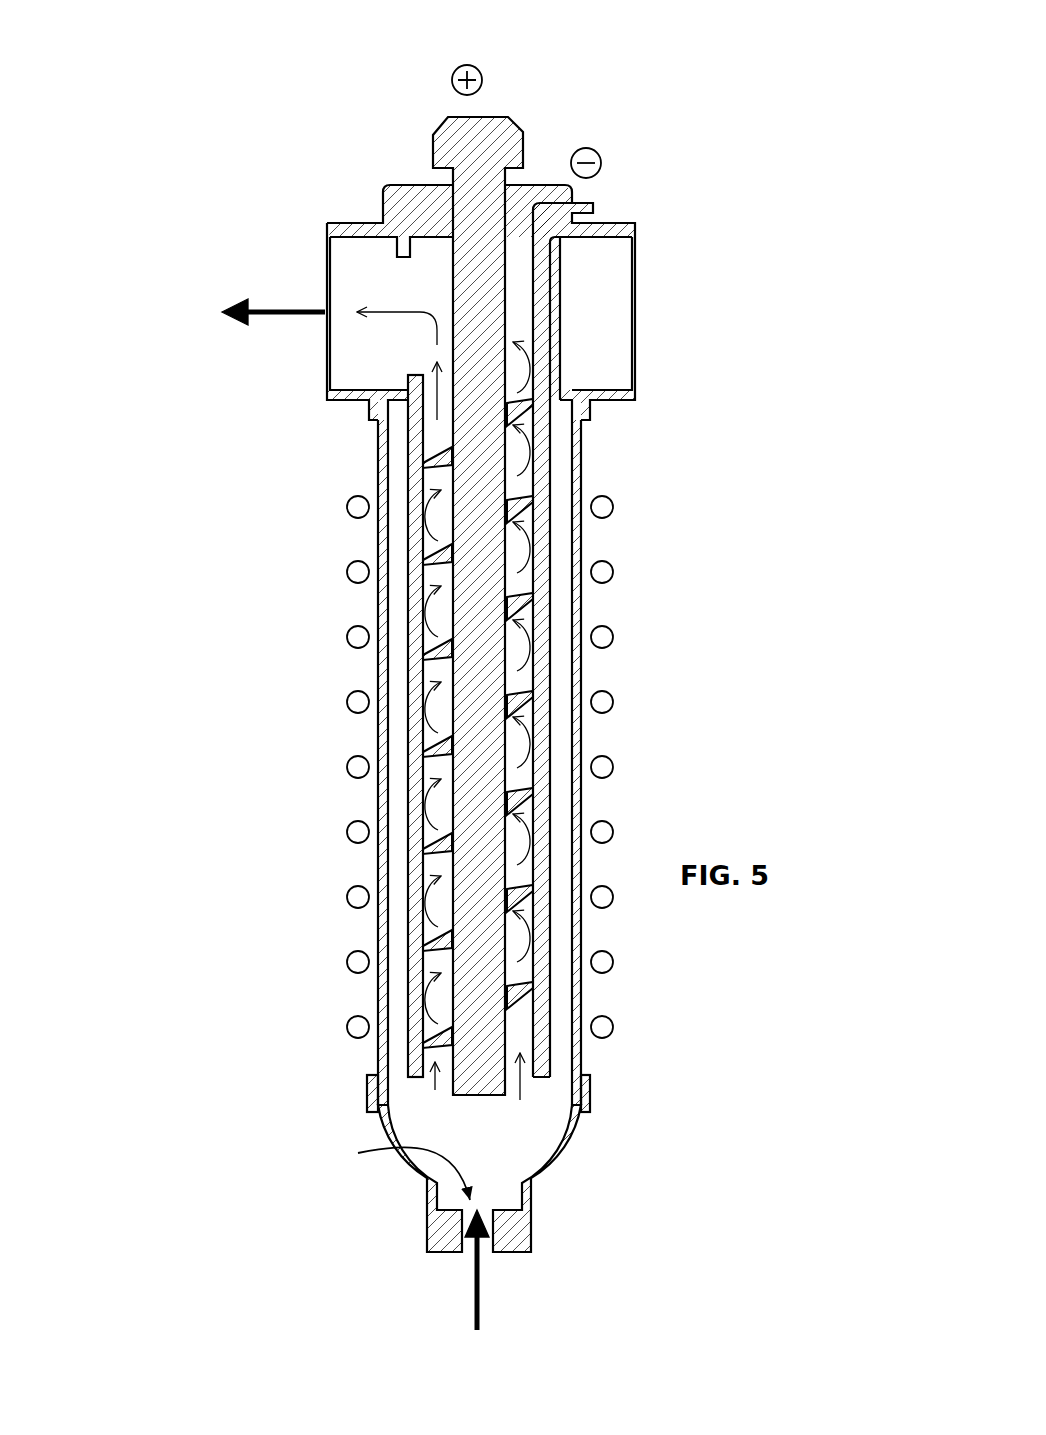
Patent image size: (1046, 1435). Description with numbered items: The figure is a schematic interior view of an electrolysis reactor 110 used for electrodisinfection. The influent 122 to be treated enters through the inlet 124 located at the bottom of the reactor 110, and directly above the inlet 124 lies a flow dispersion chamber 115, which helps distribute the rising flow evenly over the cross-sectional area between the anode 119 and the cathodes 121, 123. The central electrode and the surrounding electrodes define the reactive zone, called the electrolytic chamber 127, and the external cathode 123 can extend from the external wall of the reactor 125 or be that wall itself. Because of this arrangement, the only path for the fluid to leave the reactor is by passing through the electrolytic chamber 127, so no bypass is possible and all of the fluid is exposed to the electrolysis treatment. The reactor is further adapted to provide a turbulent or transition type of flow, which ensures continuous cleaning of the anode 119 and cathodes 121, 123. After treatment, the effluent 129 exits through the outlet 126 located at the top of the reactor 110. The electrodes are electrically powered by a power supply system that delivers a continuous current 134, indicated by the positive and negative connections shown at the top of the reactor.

The reactor 110 is at (667, 135).
The flow dispersion chamber 115 is at (518, 1152).
The anode 119 is at (548, 803).
The cathode 121 is at (472, 215).
The influent 122 is at (485, 1272).
The external cathode 123 is at (578, 600).
The inlet 124 is at (385, 1171).
The external wall of the reactor 125 is at (578, 938).
The outlet 126 is at (325, 292).
The electrolytic chamber 127 is at (557, 469).
The effluent 129 is at (300, 315).
The continuous current 134 is at (585, 128).